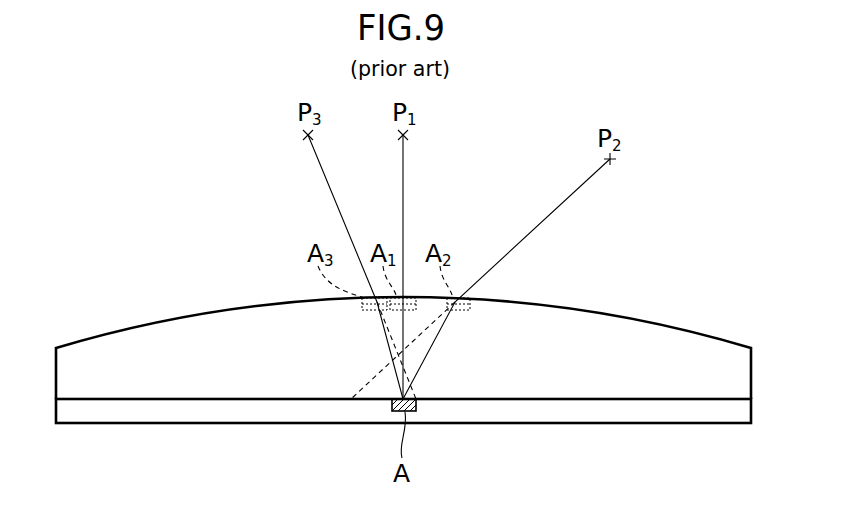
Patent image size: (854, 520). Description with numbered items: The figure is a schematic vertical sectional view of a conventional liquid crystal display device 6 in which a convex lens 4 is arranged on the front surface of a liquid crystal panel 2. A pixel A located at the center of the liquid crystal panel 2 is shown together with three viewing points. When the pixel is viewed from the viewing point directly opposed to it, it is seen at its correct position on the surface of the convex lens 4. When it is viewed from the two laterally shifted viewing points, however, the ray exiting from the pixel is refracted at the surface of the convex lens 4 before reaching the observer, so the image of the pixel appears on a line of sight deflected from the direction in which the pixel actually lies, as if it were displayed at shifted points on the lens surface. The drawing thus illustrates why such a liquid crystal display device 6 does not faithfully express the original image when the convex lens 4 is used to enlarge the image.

The liquid crystal panel 2 is at (745, 411).
The convex lens 4 is at (703, 336).
The liquid crystal display device 6 is at (427, 315).